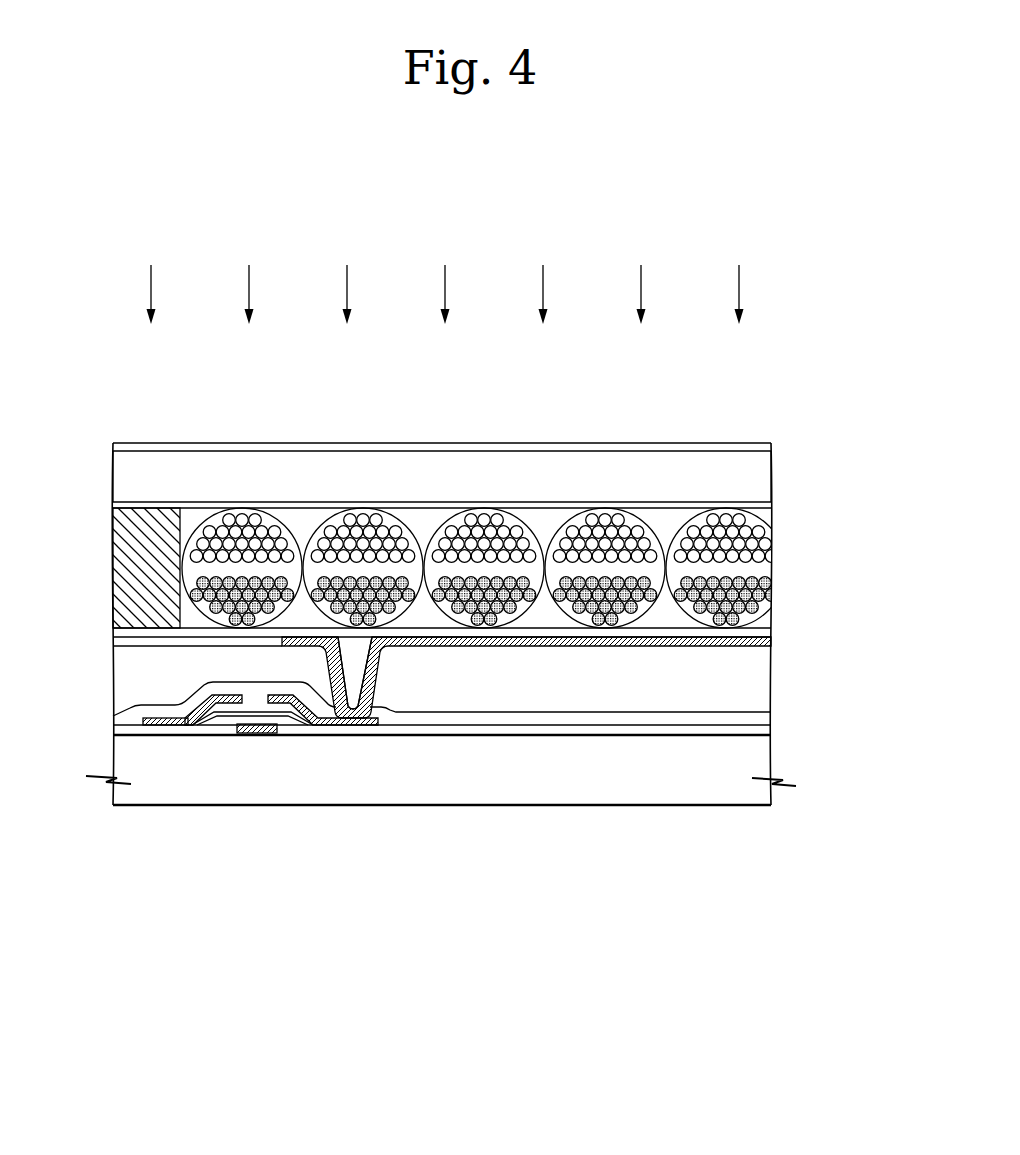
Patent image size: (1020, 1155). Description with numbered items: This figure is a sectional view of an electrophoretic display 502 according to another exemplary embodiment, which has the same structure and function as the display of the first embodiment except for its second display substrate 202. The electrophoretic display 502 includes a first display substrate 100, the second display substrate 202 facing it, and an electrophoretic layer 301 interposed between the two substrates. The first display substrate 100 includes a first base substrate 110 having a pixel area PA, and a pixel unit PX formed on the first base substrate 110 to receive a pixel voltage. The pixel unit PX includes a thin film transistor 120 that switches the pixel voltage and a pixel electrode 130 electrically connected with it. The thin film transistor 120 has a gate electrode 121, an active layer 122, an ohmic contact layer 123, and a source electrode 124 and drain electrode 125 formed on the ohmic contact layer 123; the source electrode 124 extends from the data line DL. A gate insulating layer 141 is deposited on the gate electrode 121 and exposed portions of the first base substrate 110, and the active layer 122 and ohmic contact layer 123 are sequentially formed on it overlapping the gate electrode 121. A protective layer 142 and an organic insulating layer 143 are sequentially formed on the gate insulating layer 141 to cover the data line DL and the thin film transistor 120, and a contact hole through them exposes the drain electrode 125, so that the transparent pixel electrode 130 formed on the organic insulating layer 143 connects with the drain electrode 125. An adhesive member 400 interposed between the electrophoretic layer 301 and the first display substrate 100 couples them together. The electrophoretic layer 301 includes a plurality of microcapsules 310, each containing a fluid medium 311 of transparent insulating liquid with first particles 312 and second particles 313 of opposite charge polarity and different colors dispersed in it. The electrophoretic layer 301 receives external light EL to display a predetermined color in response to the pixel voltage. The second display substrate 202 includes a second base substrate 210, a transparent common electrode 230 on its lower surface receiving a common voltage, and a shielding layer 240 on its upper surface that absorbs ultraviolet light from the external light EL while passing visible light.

The electrophoretic display 502 is at (800, 204).
The external light EL is at (741, 288).
The second display substrate 202 is at (520, 479).
The shielding layer 240 is at (762, 448).
The second base substrate 210 is at (762, 476).
The common electrode 230 is at (486, 508).
The electrophoretic layer 301 is at (522, 487).
The microcapsule 310 is at (478, 487).
The fluid medium 311 is at (247, 570).
The first particles 312 is at (204, 560).
The second particles 313 is at (267, 590).
The adhesive member 400 is at (762, 634).
The pixel electrode 130 is at (441, 648).
The first display substrate 100 is at (520, 725).
The organic insulating layer 143 is at (760, 682).
The protective layer 142 is at (760, 712).
The gate insulating layer 141 is at (760, 730).
The first base substrate 110 is at (486, 770).
The data line DL is at (140, 720).
The thin film transistor 120 is at (262, 769).
The gate electrode 121 is at (258, 735).
The active layer 122 is at (210, 727).
The ohmic contact layer 123 is at (305, 724).
The source electrode 124 is at (183, 728).
The drain electrode 125 is at (362, 745).
The pixel unit PX is at (465, 900).
The pixel area PA is at (771, 971).